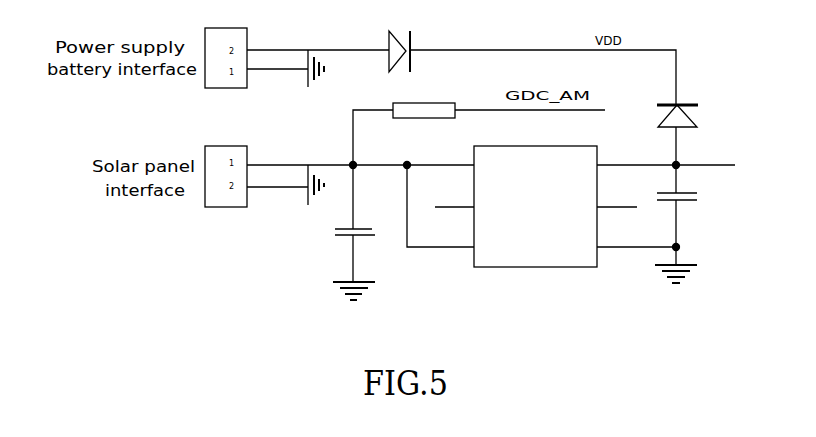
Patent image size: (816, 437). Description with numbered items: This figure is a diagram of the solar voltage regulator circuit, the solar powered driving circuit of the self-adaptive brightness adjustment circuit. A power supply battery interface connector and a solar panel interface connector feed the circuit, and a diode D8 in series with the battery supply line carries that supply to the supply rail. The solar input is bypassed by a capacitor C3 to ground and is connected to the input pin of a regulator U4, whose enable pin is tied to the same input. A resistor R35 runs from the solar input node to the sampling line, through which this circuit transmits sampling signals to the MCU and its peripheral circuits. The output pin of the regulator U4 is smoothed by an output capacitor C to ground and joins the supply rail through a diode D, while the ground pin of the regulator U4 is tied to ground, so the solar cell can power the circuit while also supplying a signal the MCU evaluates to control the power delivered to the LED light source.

The diode D8 is at (399, 43).
The resistor R35 is at (479, 126).
The low-dropout regulator MIC5213 U4 is at (536, 210).
The input capacitor C3 is at (362, 232).
The output capacitor C is at (682, 195).
The diode D is at (683, 107).